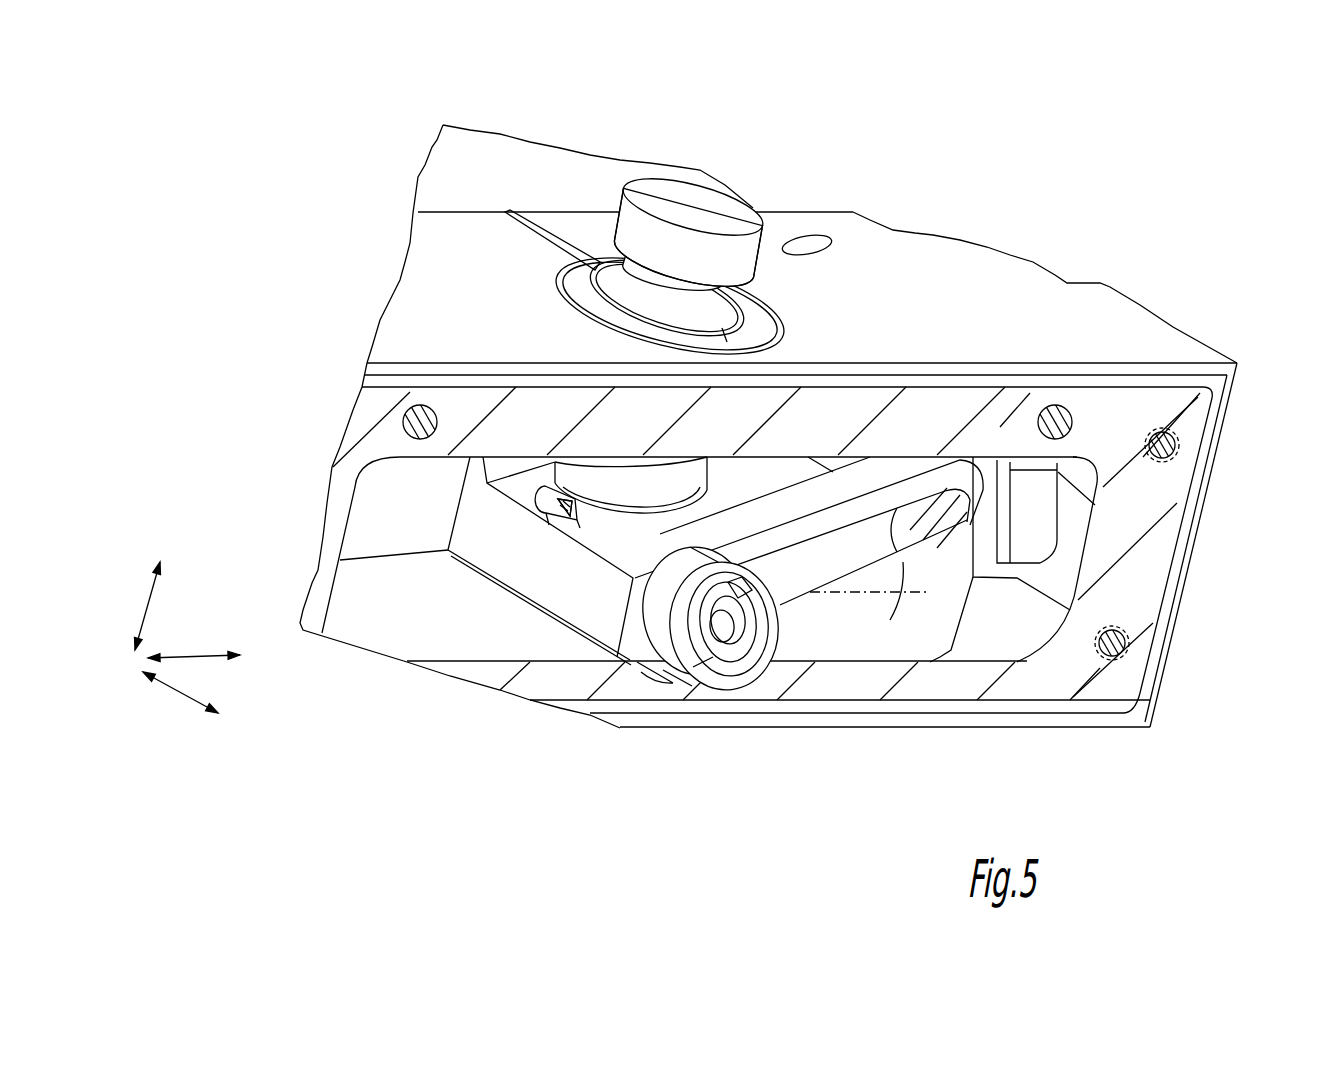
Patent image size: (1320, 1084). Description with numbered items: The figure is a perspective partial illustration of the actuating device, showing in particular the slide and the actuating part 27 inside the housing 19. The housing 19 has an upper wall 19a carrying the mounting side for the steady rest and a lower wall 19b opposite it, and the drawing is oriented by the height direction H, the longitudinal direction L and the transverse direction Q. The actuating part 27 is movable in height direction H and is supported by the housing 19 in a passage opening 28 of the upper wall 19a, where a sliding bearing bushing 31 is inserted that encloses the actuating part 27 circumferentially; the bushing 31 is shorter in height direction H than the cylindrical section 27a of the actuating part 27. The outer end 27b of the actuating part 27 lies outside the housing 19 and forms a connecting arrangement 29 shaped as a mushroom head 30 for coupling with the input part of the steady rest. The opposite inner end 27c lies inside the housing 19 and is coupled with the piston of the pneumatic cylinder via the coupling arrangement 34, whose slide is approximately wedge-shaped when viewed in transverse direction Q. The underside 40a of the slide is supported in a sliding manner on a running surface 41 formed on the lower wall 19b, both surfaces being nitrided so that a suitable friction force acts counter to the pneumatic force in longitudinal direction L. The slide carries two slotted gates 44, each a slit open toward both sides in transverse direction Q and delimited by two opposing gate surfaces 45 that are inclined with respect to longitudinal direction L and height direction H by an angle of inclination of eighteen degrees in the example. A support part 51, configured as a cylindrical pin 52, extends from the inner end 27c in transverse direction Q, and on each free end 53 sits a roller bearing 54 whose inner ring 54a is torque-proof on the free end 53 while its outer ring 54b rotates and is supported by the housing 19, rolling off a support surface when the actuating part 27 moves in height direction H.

The housing 19 is at (1200, 528).
The upper wall 19a is at (1003, 425).
The lower wall 19b is at (933, 677).
The actuating part 27 is at (767, 200).
The cylindrical section 27a is at (537, 487).
The outer end 27b is at (633, 232).
The inner end 27c is at (620, 530).
The passage opening 28 is at (563, 277).
The connecting arrangement 29 is at (657, 198).
The mushroom head 30 is at (688, 237).
The sliding bearing bushing 31 is at (767, 333).
The coupling arrangement 34 is at (983, 610).
The underside 40a is at (862, 665).
The running surface 41 is at (407, 635).
The slotted gate 44 is at (883, 537).
The gate surfaces 45 is at (860, 523).
The support part 51 is at (550, 512).
The cylindrical pin 52 is at (565, 507).
The free end 53 is at (757, 620).
The roller bearing 54 is at (757, 553).
The inner ring 54a is at (768, 640).
The outer ring 54b is at (693, 668).
The height direction H is at (140, 603).
The longitudinal direction L is at (190, 657).
The transverse direction Q is at (180, 693).